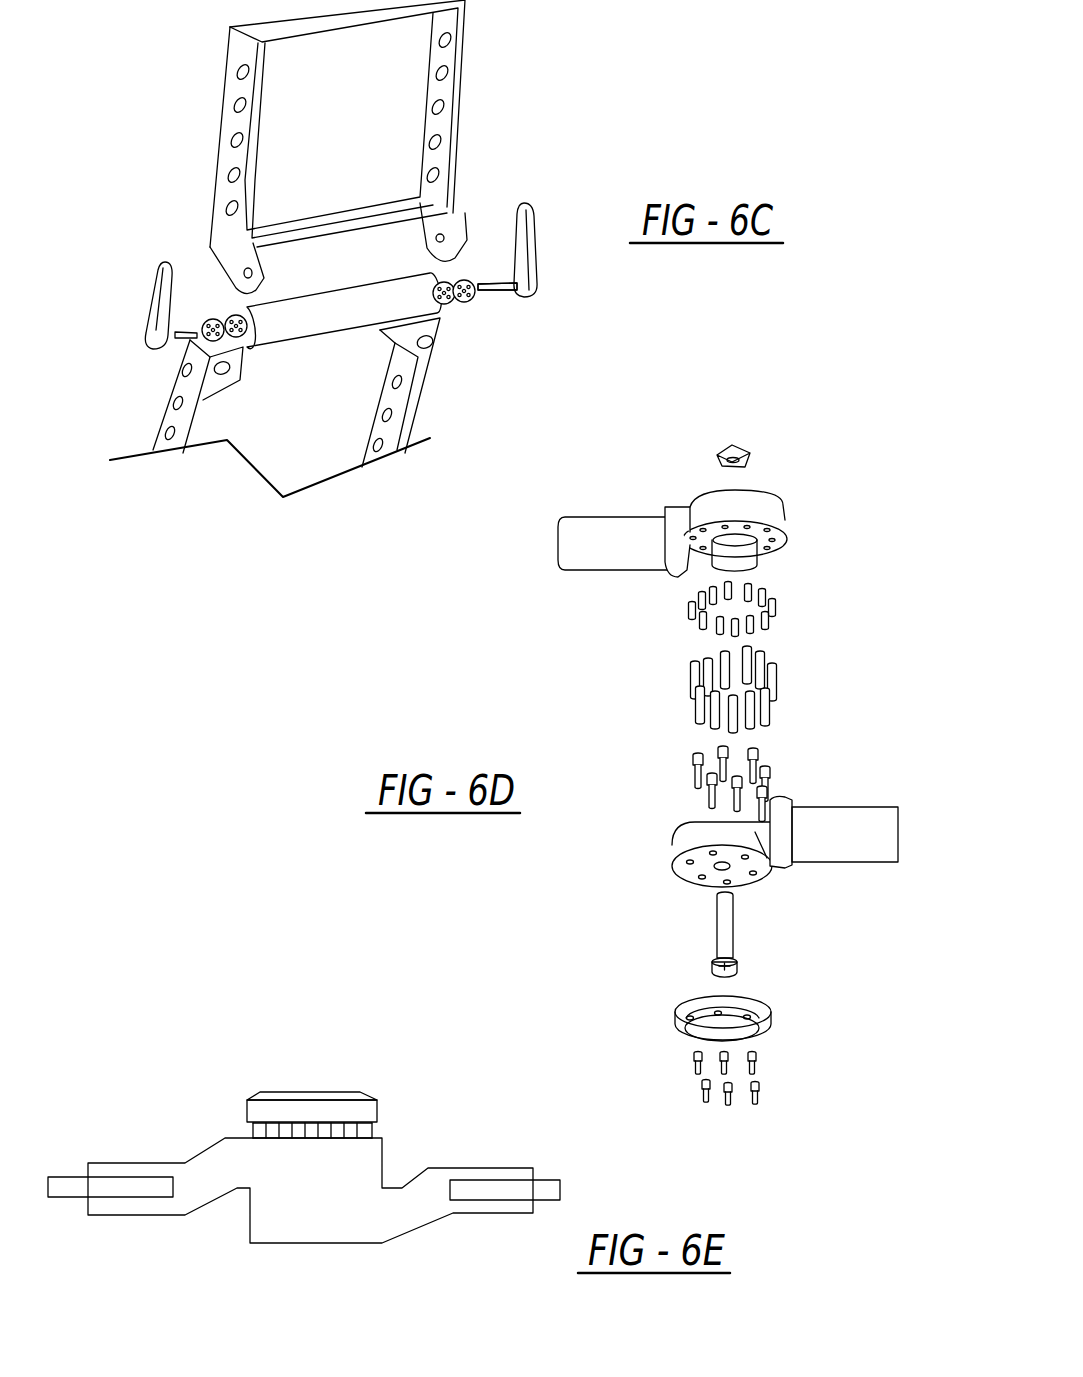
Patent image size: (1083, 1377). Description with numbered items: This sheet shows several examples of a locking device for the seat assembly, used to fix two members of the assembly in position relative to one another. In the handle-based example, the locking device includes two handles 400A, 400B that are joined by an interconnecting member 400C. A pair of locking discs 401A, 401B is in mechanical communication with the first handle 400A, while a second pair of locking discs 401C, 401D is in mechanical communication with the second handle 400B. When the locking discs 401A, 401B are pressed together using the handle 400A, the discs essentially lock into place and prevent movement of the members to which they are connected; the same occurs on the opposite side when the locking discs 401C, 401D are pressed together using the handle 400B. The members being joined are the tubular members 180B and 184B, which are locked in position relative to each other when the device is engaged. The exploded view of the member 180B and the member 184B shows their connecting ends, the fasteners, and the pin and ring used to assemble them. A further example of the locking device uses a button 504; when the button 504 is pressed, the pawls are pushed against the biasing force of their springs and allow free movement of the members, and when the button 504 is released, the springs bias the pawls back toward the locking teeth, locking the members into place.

In FIG. 6C, the handle 400A is at (153, 290).
In FIG. 6C, the handle 400B is at (543, 223).
In FIG. 6C, the interconnecting member 400C is at (490, 293).
In FIG. 6C, the locking disc 401A is at (213, 317).
In FIG. 6C, the locking disc 401B is at (230, 313).
In FIG. 6C, the locking disc 401C is at (453, 310).
In FIG. 6C, the locking disc 401D is at (483, 277).
In FIG. 6D, the member 180B is at (617, 557).
In FIG. 6D, the member 184B is at (867, 845).
In FIG. 6E, the button 504 is at (285, 1092).